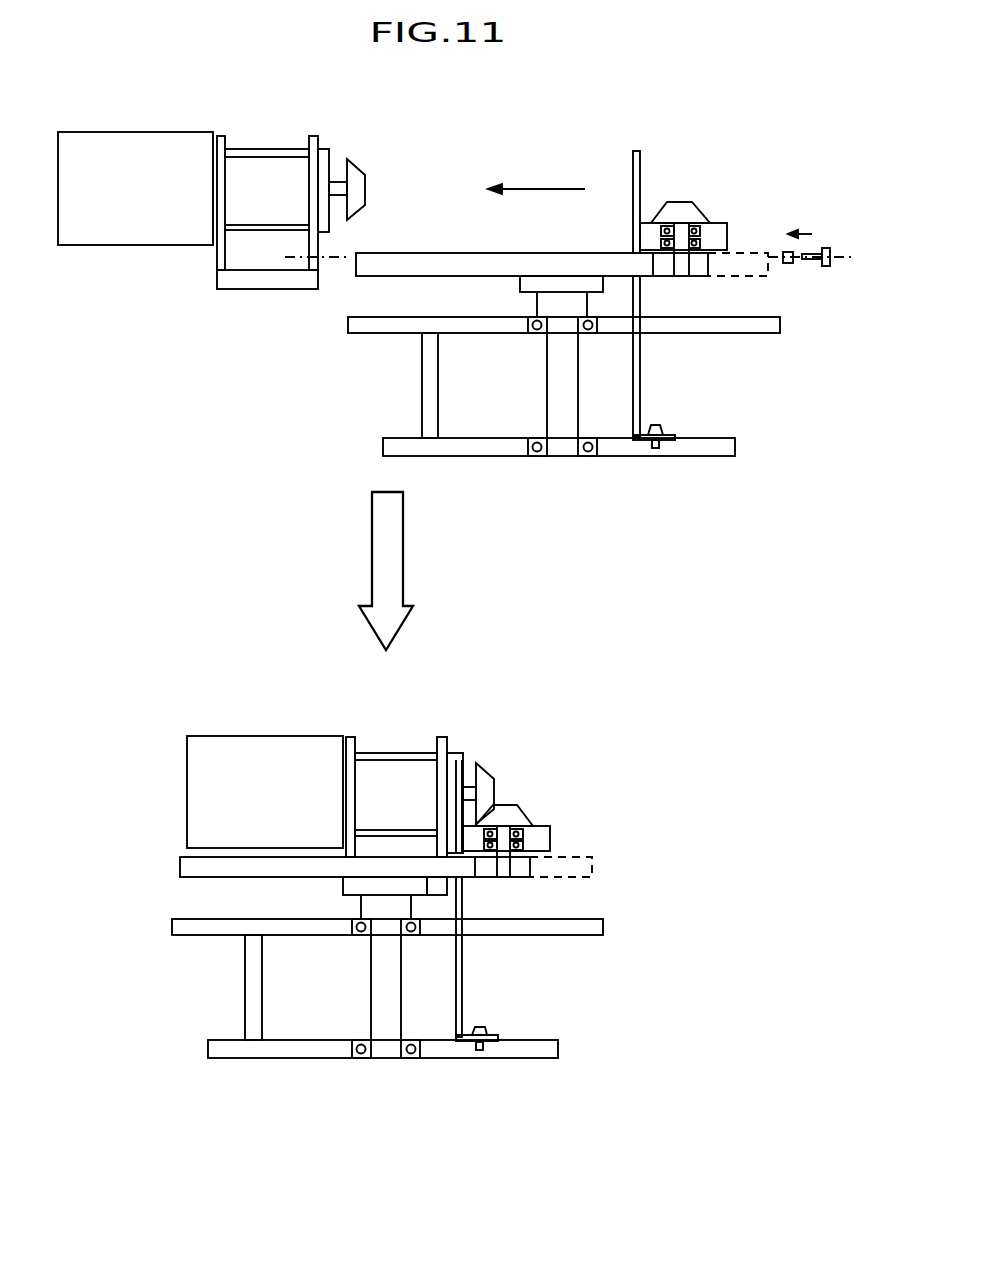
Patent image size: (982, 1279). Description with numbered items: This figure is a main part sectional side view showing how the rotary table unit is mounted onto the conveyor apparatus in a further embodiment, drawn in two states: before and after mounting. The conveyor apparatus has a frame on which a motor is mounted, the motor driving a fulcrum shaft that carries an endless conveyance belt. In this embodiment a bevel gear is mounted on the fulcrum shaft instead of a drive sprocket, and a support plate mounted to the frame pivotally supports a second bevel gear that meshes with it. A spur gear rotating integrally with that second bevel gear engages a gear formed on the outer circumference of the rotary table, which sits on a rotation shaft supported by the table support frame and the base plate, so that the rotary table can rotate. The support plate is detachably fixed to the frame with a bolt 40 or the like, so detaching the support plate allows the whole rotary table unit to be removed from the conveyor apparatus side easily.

The bolt 40 is at (826, 250).